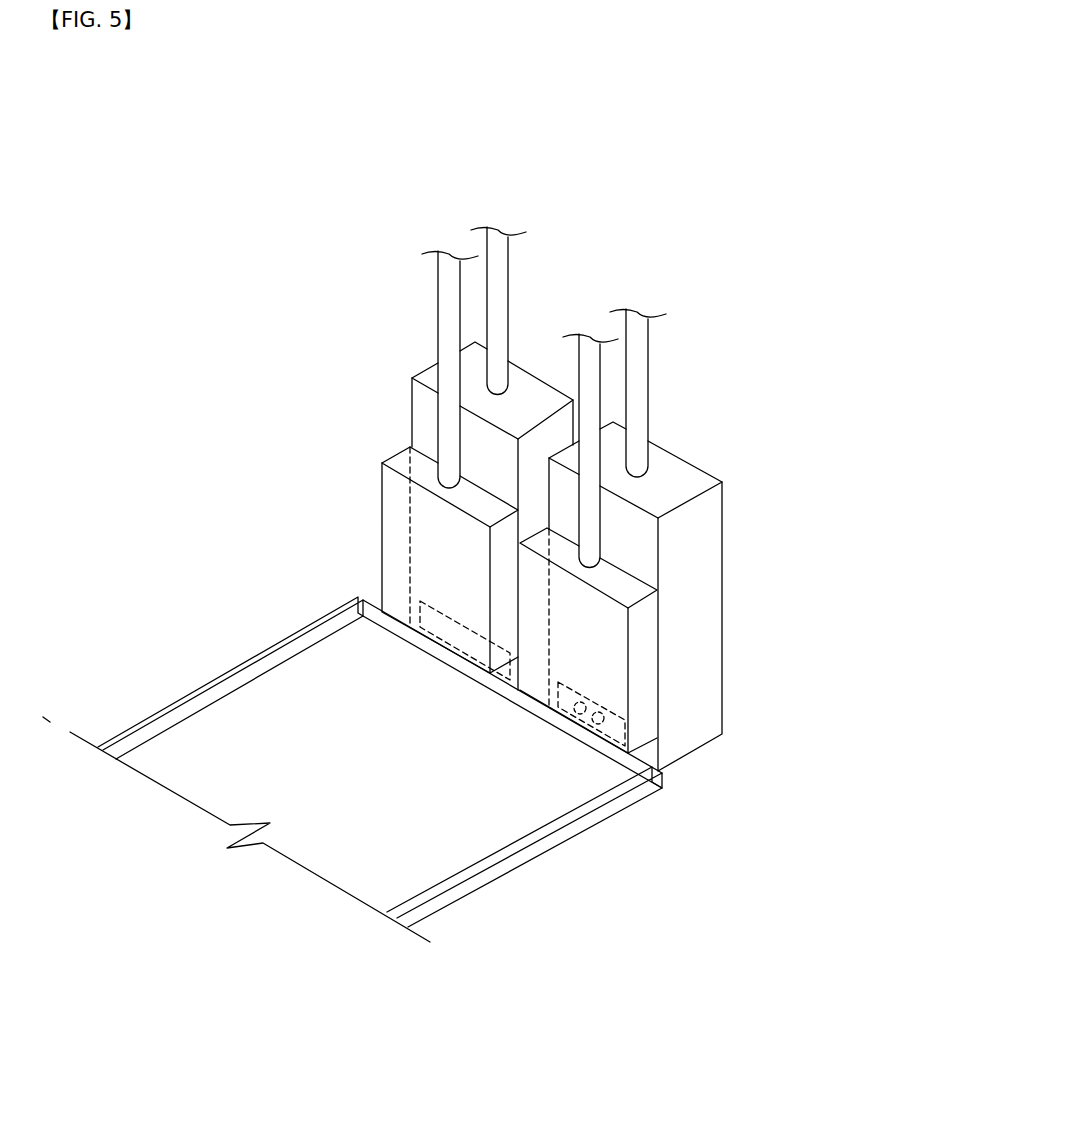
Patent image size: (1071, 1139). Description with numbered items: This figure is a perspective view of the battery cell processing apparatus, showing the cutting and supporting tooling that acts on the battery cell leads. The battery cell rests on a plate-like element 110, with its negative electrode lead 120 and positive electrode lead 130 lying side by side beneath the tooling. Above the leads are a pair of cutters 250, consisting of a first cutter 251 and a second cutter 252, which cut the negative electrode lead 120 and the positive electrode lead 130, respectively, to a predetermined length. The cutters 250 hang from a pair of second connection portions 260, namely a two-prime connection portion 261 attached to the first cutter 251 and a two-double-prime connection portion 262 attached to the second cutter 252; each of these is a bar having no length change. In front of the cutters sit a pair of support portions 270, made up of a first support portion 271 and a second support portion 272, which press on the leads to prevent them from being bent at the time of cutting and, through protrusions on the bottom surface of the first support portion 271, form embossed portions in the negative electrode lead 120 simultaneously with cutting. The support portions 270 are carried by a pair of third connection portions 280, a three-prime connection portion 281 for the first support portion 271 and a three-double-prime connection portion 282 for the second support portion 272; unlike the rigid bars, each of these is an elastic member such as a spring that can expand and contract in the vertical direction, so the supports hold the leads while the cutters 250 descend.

The tray plate 110 is at (216, 702).
The negative electrode lead 120 is at (648, 722).
The positive electrode lead 130 is at (440, 622).
The pair of cutters 250 is at (672, 556).
The first cutter 251 is at (710, 535).
The second cutter 252 is at (567, 402).
The pair of second connection portions 260 is at (568, 268).
The 2' connection portion 261 is at (637, 322).
The 2" connection portion 262 is at (498, 238).
The pair of support portions 270 is at (547, 838).
The first support portion 271 is at (572, 847).
The second support portion 272 is at (450, 589).
The pair of third connection portions 280 is at (418, 409).
The 3' connection portion 281 is at (585, 517).
The 3" connection portion 282 is at (445, 373).